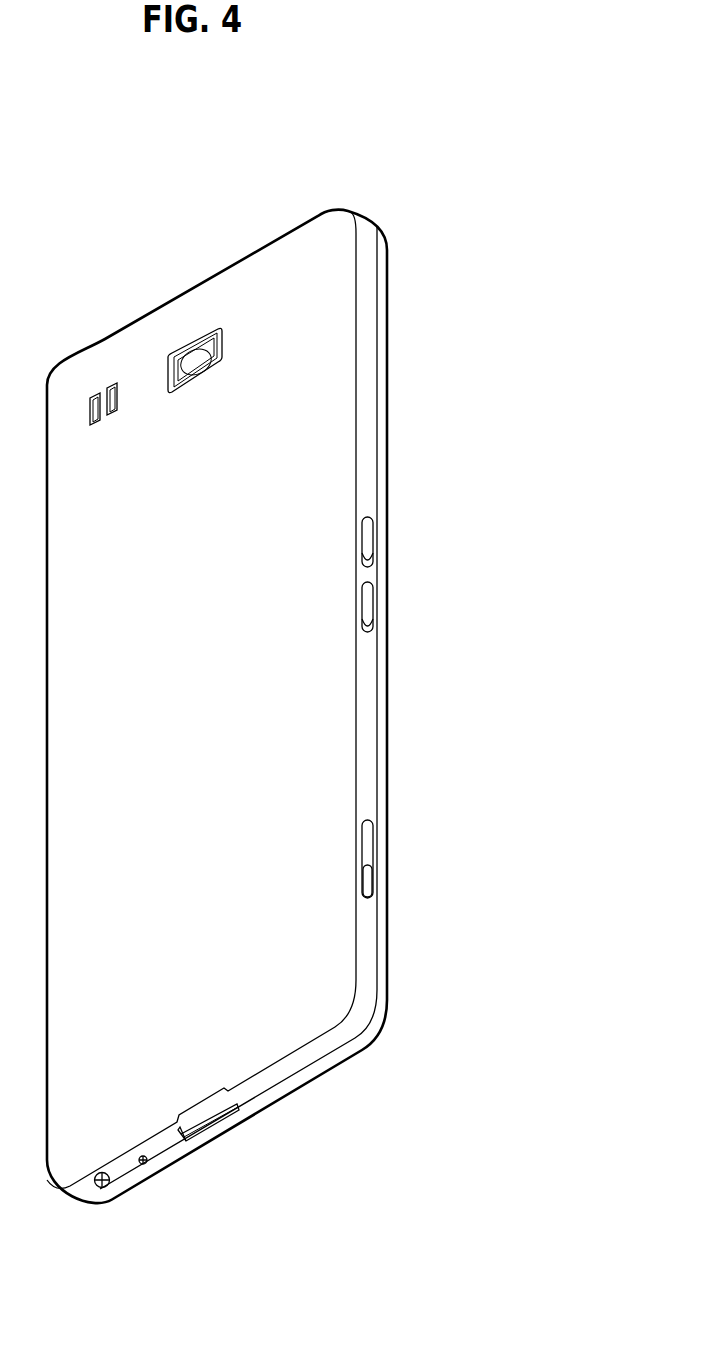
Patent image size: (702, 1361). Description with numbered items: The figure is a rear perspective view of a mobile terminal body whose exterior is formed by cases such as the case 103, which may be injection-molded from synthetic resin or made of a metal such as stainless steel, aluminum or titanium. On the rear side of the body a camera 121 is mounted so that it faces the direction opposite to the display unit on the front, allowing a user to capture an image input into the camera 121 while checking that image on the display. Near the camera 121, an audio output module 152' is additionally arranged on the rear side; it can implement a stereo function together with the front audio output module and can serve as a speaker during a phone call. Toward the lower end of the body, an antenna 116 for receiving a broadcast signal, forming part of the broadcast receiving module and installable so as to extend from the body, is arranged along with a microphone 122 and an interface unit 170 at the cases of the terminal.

The case 103 is at (297, 1017).
The camera 121 is at (185, 363).
The audio output module 152' is at (93, 339).
The antenna 116 is at (102, 1187).
The microphone 122 is at (143, 1167).
The interface unit 170 is at (212, 1118).